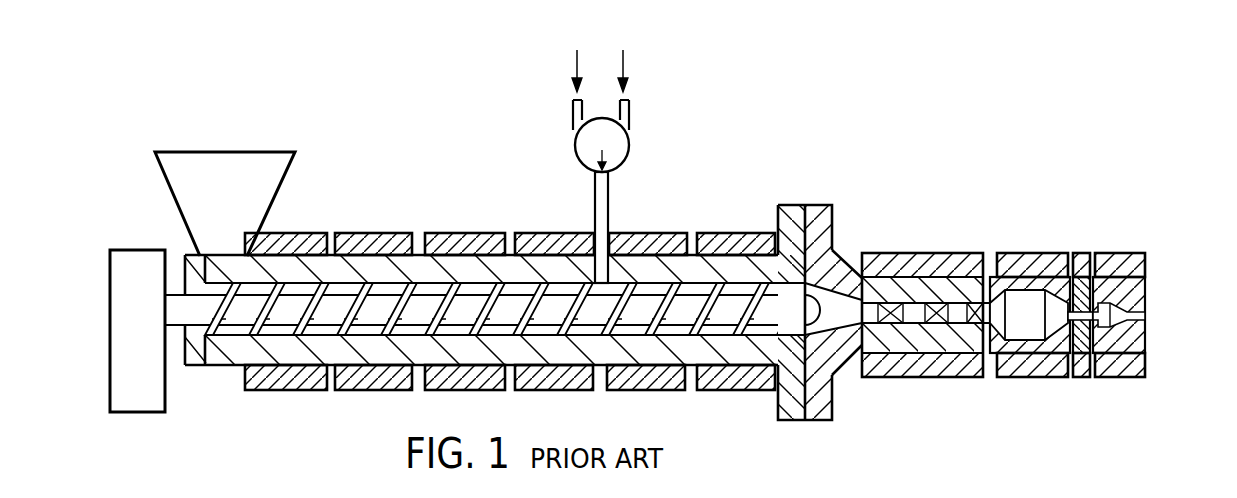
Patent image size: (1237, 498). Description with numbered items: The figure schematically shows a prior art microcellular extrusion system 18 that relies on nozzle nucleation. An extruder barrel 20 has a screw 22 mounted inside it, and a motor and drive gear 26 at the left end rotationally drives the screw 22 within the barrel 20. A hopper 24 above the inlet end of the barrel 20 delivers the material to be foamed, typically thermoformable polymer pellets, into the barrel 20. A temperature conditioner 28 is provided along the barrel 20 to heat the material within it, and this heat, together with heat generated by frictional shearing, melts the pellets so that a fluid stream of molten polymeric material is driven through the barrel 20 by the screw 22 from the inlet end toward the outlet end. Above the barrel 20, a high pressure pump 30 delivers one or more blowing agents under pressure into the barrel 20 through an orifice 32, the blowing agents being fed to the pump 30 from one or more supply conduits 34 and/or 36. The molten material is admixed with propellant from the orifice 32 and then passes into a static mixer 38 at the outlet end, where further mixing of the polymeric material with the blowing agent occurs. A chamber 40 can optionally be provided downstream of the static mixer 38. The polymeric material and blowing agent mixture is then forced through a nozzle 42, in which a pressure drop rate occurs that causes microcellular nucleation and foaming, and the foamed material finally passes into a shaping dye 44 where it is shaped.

The extrusion system 18 is at (338, 130).
The extruder barrel 20 is at (288, 265).
The screw 22 is at (374, 300).
The hopper 24 is at (226, 165).
The motor and drive gear 26 is at (141, 267).
The temperature conditioner 28 is at (452, 236).
The high pressure pump 30 is at (580, 144).
The orifice 32 is at (610, 246).
The supply conduit 34 is at (575, 68).
The supply conduit 36 is at (628, 66).
The static mixer 38 is at (893, 259).
The chamber 40 is at (1018, 300).
The nozzle 42 is at (1082, 262).
The shaping dye 44 is at (1115, 288).